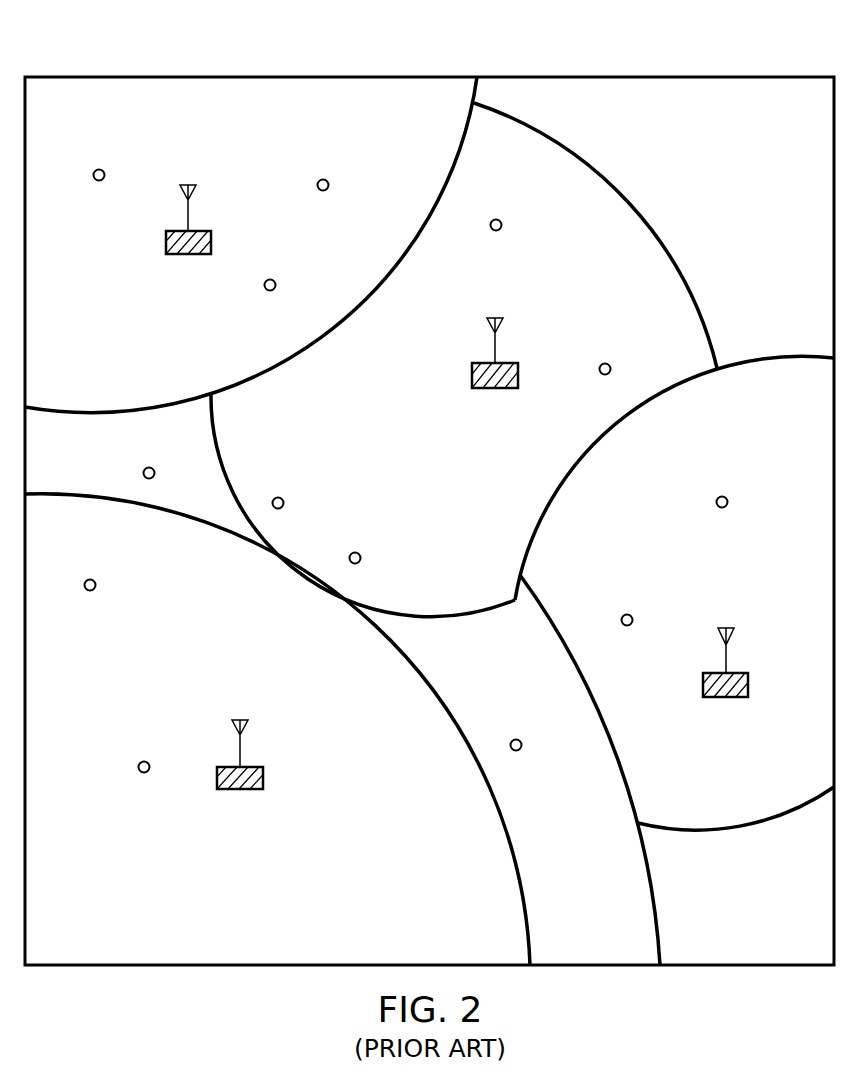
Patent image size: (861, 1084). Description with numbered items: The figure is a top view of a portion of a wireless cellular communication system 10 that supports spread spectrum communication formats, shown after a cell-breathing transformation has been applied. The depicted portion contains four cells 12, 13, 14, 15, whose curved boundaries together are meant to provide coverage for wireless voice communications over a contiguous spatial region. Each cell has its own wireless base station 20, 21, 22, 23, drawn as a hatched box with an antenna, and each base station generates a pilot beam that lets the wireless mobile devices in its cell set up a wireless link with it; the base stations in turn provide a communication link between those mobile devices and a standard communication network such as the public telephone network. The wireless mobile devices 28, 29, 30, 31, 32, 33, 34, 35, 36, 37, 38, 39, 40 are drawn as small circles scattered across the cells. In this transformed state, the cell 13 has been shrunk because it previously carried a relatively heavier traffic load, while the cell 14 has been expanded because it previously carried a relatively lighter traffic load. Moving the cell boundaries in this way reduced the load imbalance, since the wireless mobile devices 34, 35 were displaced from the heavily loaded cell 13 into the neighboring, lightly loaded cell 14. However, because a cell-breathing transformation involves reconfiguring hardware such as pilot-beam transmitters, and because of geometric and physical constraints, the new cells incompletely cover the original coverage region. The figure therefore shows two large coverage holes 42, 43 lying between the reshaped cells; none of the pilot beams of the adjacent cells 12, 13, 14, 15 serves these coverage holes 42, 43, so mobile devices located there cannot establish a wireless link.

The wireless cellular communication system 10 is at (212, 76).
The cell 12 is at (768, 356).
The cell 13 is at (522, 888).
The cell 14 is at (641, 218).
The cell 15 is at (323, 339).
The wireless base station 20 is at (748, 685).
The wireless base station 21 is at (228, 790).
The wireless base station 22 is at (481, 389).
The wireless base station 23 is at (166, 243).
The wireless mobile device 28 is at (724, 496).
The wireless mobile device 29 is at (628, 626).
The wireless mobile device 30 is at (518, 751).
The wireless mobile device 31 is at (141, 773).
The wireless mobile device 32 is at (88, 591).
The wireless mobile device 33 is at (144, 470).
The wireless mobile device 34 is at (276, 497).
The wireless mobile device 35 is at (361, 560).
The wireless mobile device 36 is at (607, 363).
The wireless mobile device 37 is at (498, 219).
The wireless mobile device 38 is at (321, 179).
The wireless mobile device 39 is at (268, 279).
The wireless mobile device 40 is at (97, 169).
The coverage hole 42 is at (657, 887).
The coverage hole 43 is at (100, 409).